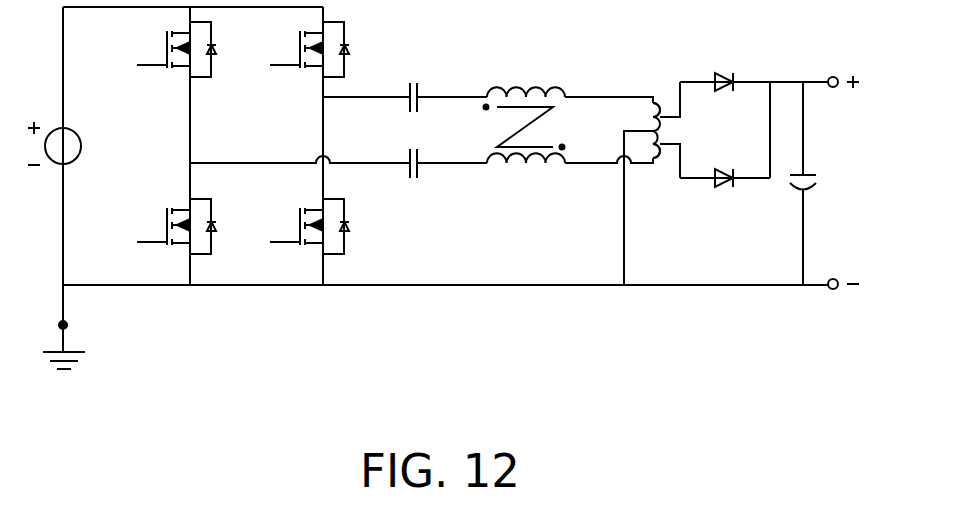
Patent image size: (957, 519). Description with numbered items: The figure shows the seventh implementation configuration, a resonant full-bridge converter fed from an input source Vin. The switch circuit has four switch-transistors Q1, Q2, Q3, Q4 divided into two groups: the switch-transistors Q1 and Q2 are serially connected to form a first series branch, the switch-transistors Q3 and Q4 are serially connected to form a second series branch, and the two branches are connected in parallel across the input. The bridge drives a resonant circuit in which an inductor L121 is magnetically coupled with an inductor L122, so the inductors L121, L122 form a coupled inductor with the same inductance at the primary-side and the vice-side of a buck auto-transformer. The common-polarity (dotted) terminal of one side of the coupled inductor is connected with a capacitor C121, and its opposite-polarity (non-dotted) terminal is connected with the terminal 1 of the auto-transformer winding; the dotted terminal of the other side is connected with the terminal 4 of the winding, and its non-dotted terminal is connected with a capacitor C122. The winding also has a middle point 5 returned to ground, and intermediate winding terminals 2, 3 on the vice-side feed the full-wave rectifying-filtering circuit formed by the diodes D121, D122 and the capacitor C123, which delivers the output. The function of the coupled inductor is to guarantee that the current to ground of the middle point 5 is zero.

The input voltage source Vin is at (73, 143).
The switch-transistor Q1 is at (192, 49).
The switch-transistor Q2 is at (193, 226).
The switch-transistor Q3 is at (327, 49).
The switch-transistor Q4 is at (327, 226).
The capacitor C121 is at (436, 81).
The capacitor C122 is at (419, 183).
The inductor L121 is at (525, 80).
The inductor L122 is at (526, 176).
The diode D121 is at (726, 62).
The diode D122 is at (726, 196).
The capacitor C123 is at (834, 183).
The terminal of the winding 1 is at (659, 116).
The transformer winding tap 2 is at (661, 118).
The transformer winding tap 3 is at (663, 140).
The terminal of the winding 4 is at (661, 158).
The middle point 5 is at (655, 121).